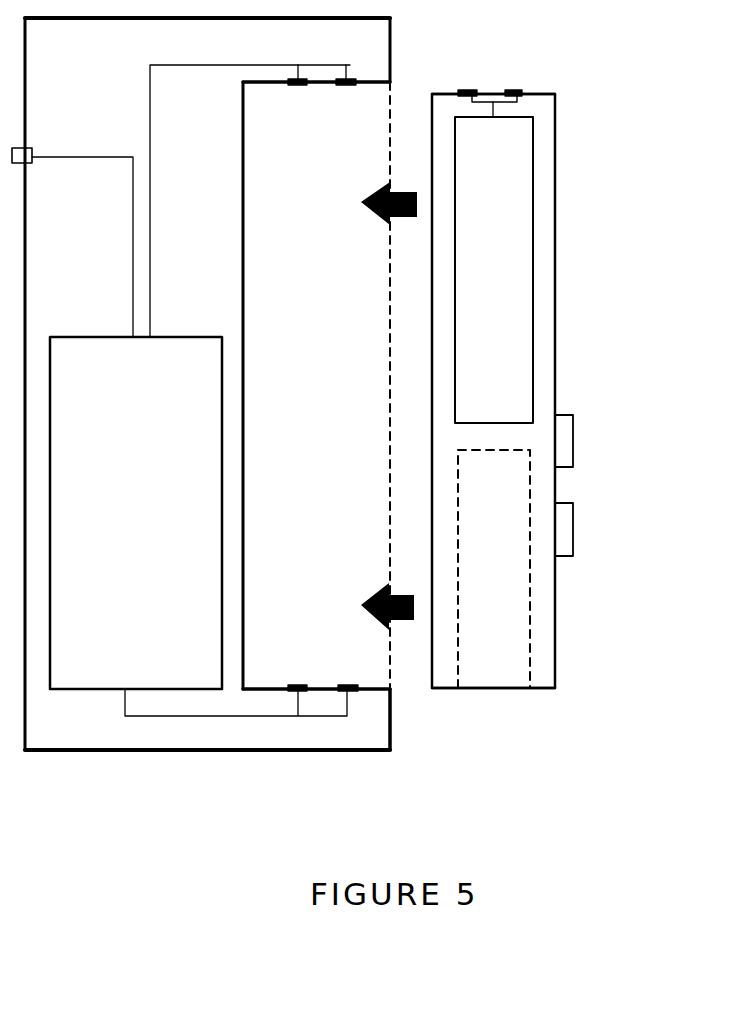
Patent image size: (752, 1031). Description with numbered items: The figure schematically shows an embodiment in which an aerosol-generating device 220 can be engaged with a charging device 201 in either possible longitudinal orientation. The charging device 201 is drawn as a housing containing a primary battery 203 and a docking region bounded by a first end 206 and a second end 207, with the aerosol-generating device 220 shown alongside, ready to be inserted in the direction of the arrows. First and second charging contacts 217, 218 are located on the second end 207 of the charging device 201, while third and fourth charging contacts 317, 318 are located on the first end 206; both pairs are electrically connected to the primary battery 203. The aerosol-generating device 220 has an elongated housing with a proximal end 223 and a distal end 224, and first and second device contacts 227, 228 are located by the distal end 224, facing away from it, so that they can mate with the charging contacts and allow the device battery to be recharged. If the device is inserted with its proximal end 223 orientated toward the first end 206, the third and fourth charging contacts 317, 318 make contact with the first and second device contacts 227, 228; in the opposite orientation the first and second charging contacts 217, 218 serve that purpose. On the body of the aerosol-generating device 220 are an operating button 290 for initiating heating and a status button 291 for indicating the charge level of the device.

The charging device 201 is at (74, 756).
The primary battery 203 is at (136, 513).
The first end 206 is at (372, 92).
The second end 207 is at (385, 680).
The first charging contact 217 is at (296, 681).
The second charging contact 218 is at (347, 682).
The aerosol-generating device 220 is at (557, 252).
The proximal end 223 is at (545, 690).
The distal end 224 is at (543, 90).
The first device contact 227 is at (520, 90).
The second device contact 228 is at (468, 90).
The operating button 290 is at (575, 432).
The status button 291 is at (575, 525).
The third charging contact 317 is at (296, 87).
The fourth charging contact 318 is at (345, 87).